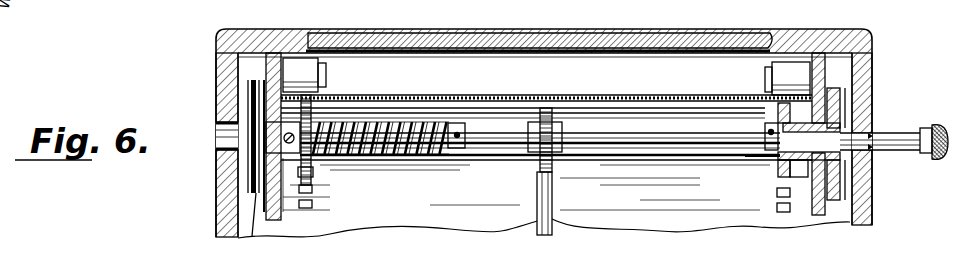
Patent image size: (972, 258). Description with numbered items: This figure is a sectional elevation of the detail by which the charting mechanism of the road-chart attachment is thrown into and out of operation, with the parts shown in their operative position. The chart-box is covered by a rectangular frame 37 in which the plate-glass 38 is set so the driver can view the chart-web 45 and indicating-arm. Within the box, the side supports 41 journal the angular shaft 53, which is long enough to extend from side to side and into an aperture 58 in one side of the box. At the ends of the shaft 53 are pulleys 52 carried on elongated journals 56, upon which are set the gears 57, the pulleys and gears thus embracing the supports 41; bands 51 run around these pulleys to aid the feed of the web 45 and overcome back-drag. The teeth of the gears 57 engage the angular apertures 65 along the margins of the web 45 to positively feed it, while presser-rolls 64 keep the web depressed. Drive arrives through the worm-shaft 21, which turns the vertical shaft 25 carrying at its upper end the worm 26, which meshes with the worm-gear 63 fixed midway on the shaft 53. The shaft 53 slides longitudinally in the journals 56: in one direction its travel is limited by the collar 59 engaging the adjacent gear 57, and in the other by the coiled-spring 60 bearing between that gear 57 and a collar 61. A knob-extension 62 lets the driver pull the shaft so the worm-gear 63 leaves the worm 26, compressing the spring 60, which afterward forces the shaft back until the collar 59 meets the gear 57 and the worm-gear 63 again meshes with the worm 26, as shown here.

The worm-shaft 21 is at (244, 225).
The vertical shaft 25 is at (537, 185).
The worm 26 is at (552, 122).
The rectangular frame 37 is at (814, 40).
The plate-glass 38 is at (596, 18).
The supports 41 is at (266, 66).
The web 45 is at (623, 85).
The bands 51 is at (832, 197).
The pulleys 52 is at (250, 182).
The angular shaft 53 is at (633, 150).
The elongated journals 56 is at (770, 123).
The gears 57 is at (311, 162).
The aperture 58 is at (222, 142).
The collar 59 is at (753, 158).
The coiled-spring 60 is at (424, 153).
The collar 61 is at (456, 123).
The knob-extension 62 is at (935, 162).
The worm-gear 63 is at (547, 108).
The presser-roll 64 is at (305, 78).
The angular apertures 65 is at (308, 204).